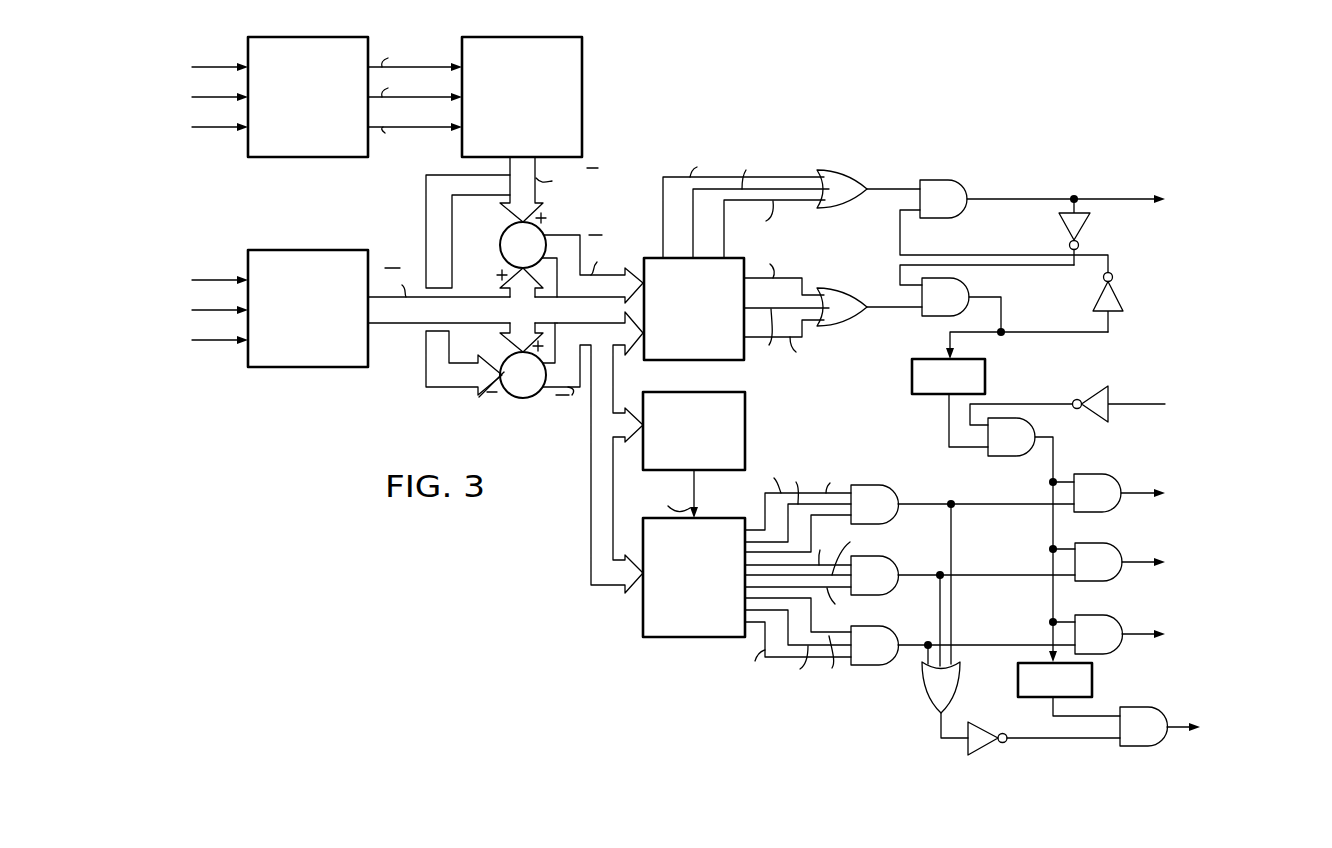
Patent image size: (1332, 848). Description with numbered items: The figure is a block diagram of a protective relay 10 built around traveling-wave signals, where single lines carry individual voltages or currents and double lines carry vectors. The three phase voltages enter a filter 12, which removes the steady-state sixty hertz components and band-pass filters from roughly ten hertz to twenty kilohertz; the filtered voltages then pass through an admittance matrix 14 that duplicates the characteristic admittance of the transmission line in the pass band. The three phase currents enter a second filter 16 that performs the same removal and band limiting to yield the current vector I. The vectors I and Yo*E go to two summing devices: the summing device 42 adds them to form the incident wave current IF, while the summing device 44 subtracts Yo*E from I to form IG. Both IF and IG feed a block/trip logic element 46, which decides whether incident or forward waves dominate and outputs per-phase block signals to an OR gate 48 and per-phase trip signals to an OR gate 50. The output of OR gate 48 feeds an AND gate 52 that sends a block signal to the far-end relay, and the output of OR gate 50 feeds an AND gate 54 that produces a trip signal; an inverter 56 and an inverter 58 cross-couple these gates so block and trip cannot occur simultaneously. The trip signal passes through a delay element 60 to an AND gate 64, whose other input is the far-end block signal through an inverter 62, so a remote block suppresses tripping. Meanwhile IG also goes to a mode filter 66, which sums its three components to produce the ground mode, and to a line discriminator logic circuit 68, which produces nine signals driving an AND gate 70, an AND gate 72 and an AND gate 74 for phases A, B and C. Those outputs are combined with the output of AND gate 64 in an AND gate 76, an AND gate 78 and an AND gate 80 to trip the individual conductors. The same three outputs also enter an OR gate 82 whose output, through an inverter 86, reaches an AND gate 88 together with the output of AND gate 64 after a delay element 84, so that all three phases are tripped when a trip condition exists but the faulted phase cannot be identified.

The protective relay 10 is at (754, 116).
The filter 12 is at (258, 37).
The admittance matrix 14 is at (582, 52).
The filter 16 is at (270, 250).
The summing device 42 is at (501, 243).
The summing device 44 is at (509, 398).
The block/trip logic element 46 is at (646, 258).
The OR gate 48 is at (829, 171).
The OR gate 50 is at (829, 289).
The AND gate 52 is at (930, 180).
The AND gate 54 is at (963, 282).
The inverter 56 is at (1089, 222).
The inverter 58 is at (1121, 293).
The delay element 60 is at (912, 376).
The inverter 62 is at (1102, 390).
The AND gate 64 is at (1016, 456).
The mode filter 66 is at (746, 431).
The line discriminator logic circuit 68 is at (645, 637).
The AND gate 70 is at (888, 486).
The AND gate 72 is at (888, 557).
The AND gate 74 is at (888, 627).
The AND gate 76 is at (1088, 475).
The AND gate 78 is at (1088, 544).
The AND gate 80 is at (1088, 616).
The OR gate 82 is at (926, 700).
The delay element 84 is at (1092, 680).
The inverter 86 is at (989, 720).
The AND gate 88 is at (1139, 708).